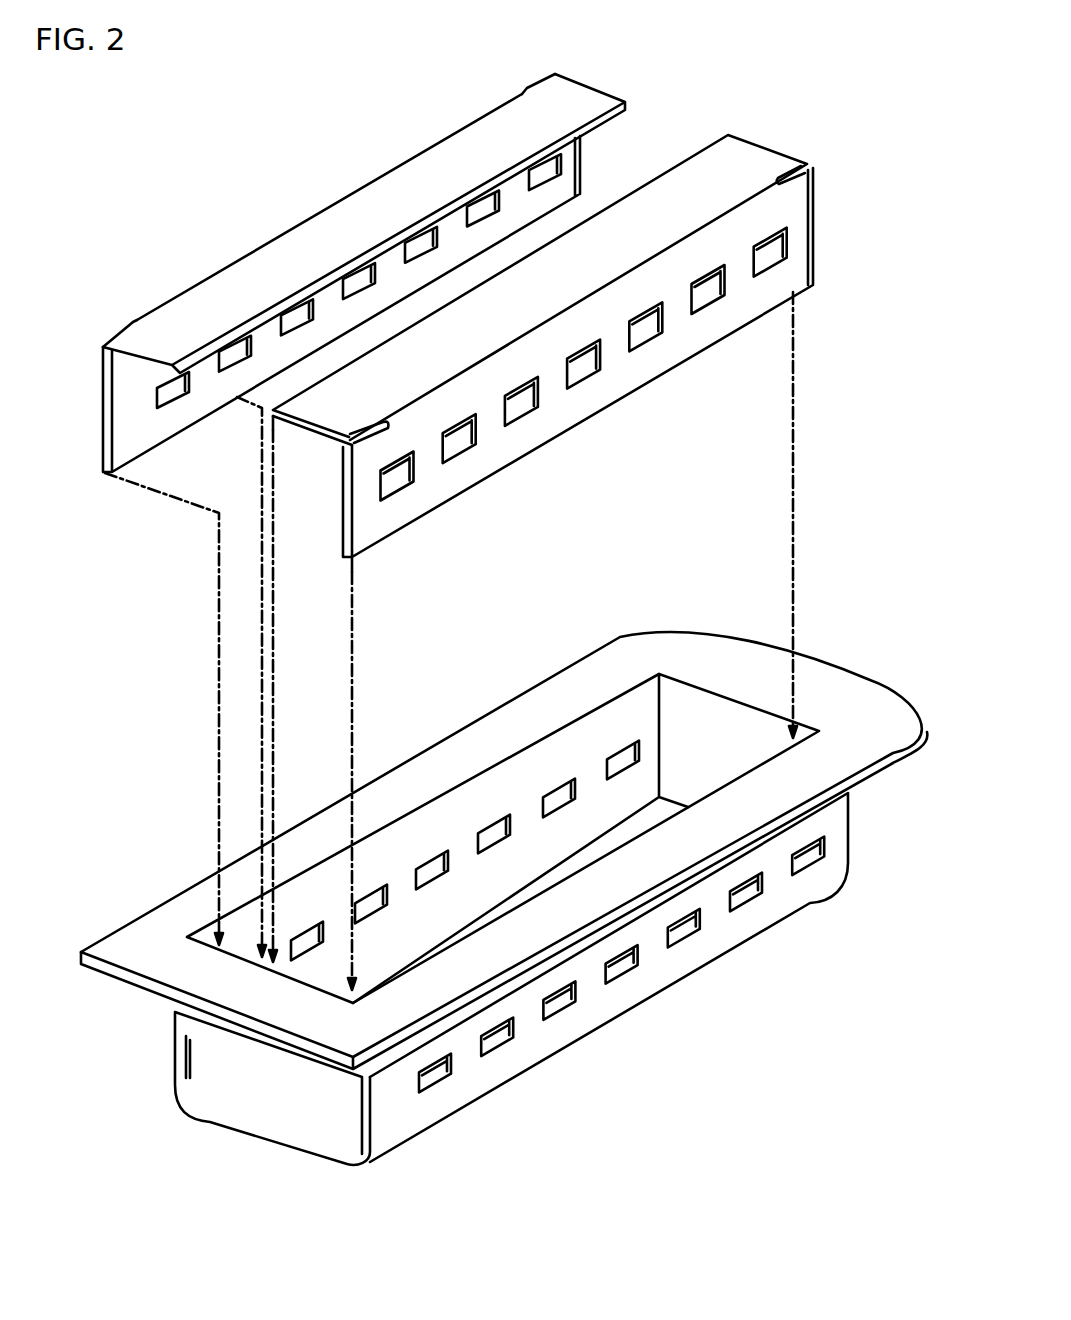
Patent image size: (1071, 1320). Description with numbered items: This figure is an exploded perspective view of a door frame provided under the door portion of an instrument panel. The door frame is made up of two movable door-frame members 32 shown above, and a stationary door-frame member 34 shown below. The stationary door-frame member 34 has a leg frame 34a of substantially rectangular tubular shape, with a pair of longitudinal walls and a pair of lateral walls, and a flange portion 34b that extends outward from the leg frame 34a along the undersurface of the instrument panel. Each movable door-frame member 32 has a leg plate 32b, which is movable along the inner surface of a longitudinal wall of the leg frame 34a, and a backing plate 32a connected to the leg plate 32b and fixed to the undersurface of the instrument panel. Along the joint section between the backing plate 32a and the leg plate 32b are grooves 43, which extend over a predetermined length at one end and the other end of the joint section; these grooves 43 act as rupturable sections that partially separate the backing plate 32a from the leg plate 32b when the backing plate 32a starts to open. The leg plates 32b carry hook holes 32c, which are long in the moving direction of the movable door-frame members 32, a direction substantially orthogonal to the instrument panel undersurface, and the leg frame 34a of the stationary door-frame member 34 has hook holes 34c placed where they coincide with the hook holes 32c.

The movable door-frame member 32 is at (488, 291).
The backing plate 32a is at (688, 188).
The leg plate 32b is at (632, 384).
The hook hole 32c is at (497, 188).
The groove 43 is at (548, 73).
The stationary door-frame member 34 is at (504, 915).
The leg frame 34a is at (784, 906).
The flange portion 34b is at (853, 698).
The hook hole 34c is at (548, 792).